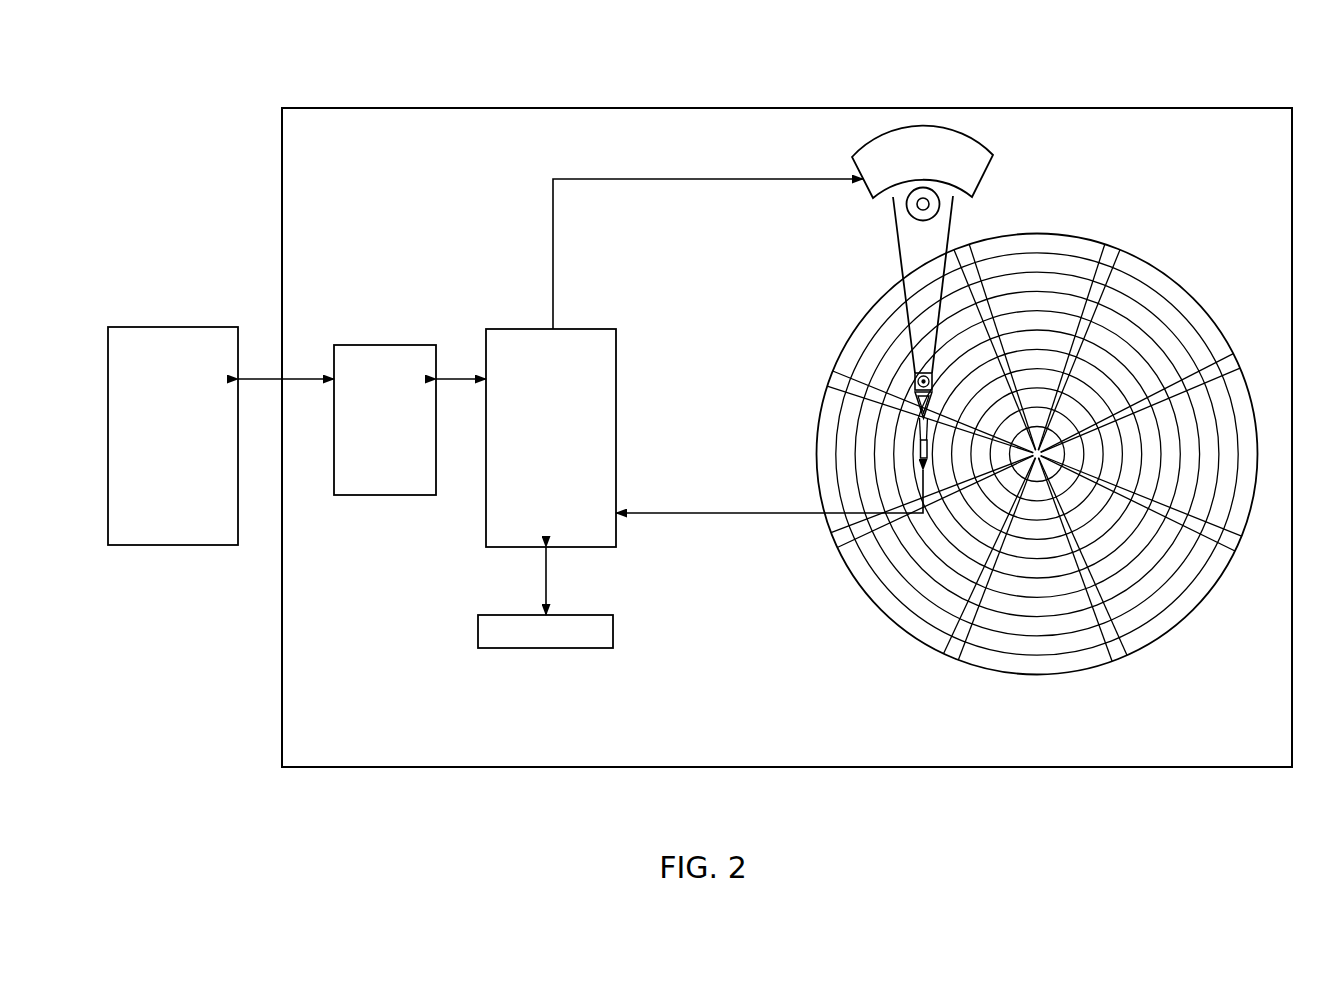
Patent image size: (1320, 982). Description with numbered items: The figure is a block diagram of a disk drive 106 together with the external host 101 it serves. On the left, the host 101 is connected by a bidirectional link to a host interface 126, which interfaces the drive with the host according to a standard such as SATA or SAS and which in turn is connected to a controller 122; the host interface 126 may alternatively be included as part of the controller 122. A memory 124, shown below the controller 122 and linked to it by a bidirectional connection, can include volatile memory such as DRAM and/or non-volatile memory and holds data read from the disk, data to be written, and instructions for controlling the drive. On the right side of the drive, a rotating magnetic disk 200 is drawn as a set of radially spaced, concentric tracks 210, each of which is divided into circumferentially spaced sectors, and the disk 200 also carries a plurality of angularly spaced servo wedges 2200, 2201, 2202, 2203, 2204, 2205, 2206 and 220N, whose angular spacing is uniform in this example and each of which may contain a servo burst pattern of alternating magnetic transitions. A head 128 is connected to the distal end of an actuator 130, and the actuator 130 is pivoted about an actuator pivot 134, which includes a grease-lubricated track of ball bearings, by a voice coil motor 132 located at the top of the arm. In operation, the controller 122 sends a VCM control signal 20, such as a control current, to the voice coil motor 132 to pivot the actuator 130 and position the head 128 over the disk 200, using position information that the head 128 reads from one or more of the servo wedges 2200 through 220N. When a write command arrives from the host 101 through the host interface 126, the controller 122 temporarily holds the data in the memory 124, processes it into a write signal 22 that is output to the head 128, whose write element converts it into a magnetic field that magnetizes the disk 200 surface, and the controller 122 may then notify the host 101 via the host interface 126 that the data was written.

The disk drive 106 is at (1105, 106).
The host 101 is at (171, 548).
The host interface 126 is at (386, 496).
The controller 122 is at (485, 544).
The memory 124 is at (528, 651).
The VCM control signal 20 is at (707, 182).
The write signal 22 is at (707, 516).
The voice coil motor (VCM) 132 is at (869, 182).
The actuator pivot 134 is at (941, 203).
The actuator 130 is at (901, 263).
The head 128 is at (919, 450).
The rotating magnetic disk 200 is at (1190, 289).
The tracks 210 is at (1032, 264).
The servo wedge 220N is at (957, 251).
The servo wedge 2200 is at (1122, 253).
The servo wedge 2201 is at (1239, 370).
The servo wedge 2202 is at (1238, 546).
The servo wedge 2203 is at (1113, 665).
The servo wedge 2204 is at (950, 660).
The servo wedge 2205 is at (838, 548).
The servo wedge 2206 is at (839, 362).